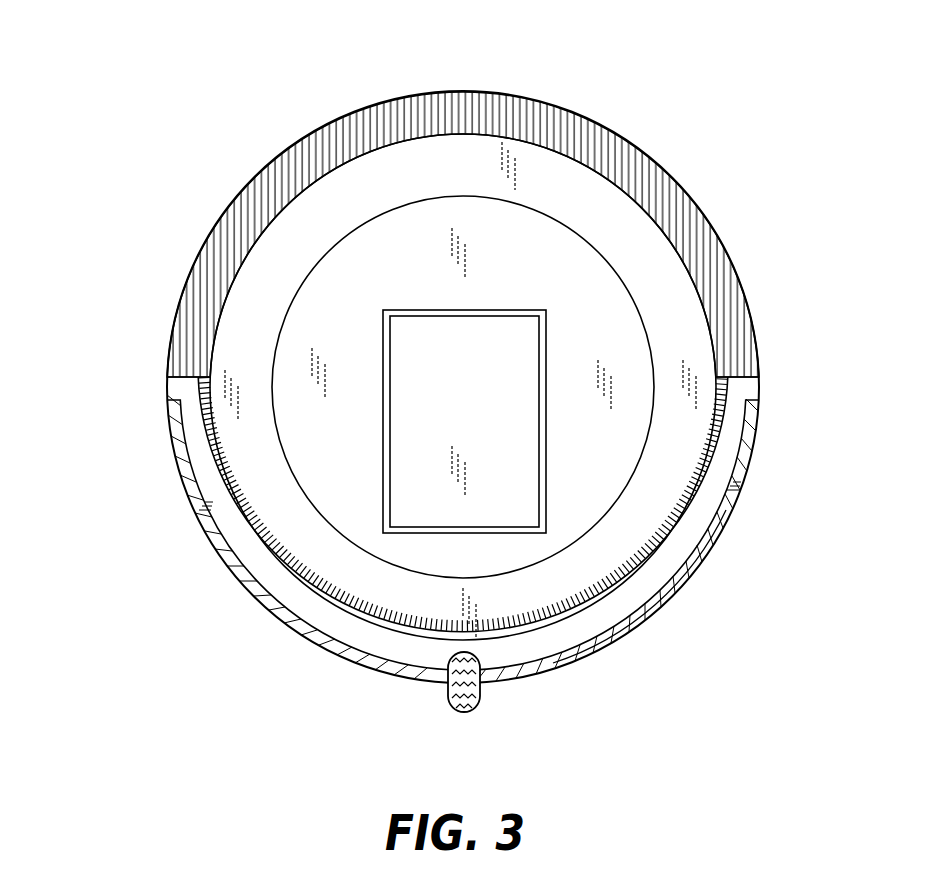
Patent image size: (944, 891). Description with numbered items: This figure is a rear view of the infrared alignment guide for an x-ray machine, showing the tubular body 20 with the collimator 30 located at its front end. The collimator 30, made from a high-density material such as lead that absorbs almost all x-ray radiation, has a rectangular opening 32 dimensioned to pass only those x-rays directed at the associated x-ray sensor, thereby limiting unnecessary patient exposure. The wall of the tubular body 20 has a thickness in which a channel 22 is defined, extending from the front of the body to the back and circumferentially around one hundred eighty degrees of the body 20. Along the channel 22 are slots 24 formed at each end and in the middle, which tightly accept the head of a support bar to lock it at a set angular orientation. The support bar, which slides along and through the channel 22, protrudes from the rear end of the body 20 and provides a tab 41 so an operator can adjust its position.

The tubular body 20 is at (262, 168).
The collimator 30 is at (423, 160).
The opening 32 is at (467, 362).
The slot 24 is at (162, 387).
The channel 22 is at (653, 588).
The tab 41 is at (446, 700).